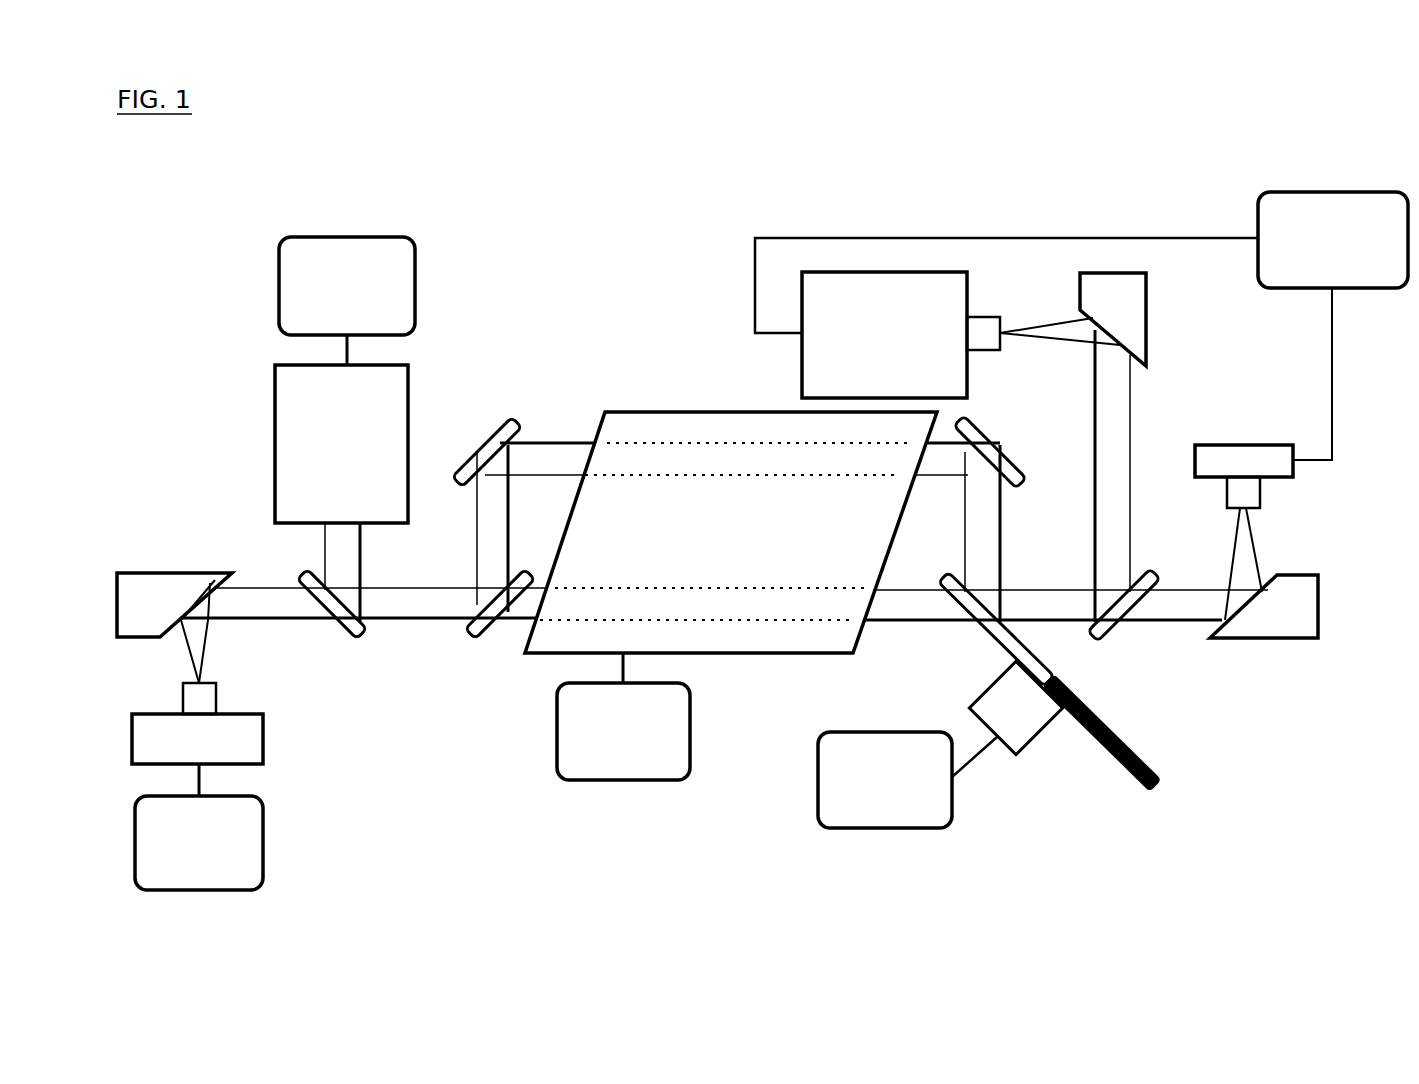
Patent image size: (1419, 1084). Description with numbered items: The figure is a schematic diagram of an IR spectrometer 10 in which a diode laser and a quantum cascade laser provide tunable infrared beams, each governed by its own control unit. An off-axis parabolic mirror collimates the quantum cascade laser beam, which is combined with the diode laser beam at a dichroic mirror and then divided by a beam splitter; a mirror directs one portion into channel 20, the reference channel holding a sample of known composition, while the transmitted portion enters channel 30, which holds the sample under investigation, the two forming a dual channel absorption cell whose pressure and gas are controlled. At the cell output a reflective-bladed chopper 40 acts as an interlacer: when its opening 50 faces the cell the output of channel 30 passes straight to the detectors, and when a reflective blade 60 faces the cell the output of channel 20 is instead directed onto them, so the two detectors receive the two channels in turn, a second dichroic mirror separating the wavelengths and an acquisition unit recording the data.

The IR spectrometer 10 is at (437, 197).
The channel 20 is at (620, 445).
The channel 30 is at (548, 645).
The chopper 40 is at (1122, 700).
The opening 50 is at (1000, 638).
The chopper blade opaque portion 60 is at (1095, 738).